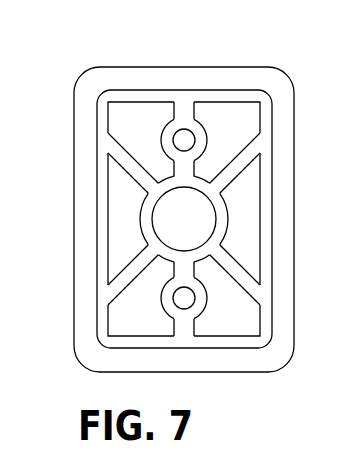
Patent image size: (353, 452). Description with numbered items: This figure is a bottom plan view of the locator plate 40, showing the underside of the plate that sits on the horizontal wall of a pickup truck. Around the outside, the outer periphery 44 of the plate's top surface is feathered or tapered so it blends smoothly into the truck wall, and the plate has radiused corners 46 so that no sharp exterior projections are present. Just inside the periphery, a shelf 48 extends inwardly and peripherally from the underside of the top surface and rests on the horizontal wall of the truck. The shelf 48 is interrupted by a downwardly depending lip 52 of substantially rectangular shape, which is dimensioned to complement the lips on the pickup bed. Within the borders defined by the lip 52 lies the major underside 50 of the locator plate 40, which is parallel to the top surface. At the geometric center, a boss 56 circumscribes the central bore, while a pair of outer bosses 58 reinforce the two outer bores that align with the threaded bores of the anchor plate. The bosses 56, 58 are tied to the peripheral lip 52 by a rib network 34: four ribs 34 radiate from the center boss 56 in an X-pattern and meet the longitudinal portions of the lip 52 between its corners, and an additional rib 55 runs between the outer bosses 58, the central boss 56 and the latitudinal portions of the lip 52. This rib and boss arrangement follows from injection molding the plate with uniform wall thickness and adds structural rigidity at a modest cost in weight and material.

The locator plate 40 is at (227, 50).
The shelf 48 is at (160, 78).
The outer periphery 44 is at (74, 188).
The radiused corners 46 is at (285, 78).
The lip 52 is at (265, 237).
The major underside 50 is at (248, 210).
The rib 55 is at (186, 109).
The rib network 34 is at (133, 263).
The boss 56 is at (147, 217).
The outer boss 58 is at (167, 130).